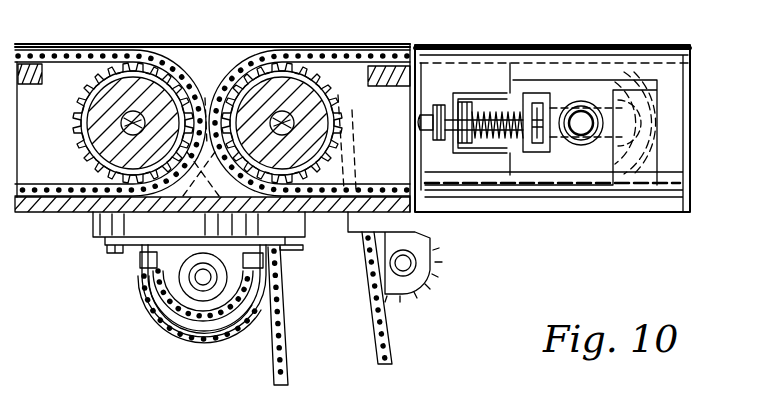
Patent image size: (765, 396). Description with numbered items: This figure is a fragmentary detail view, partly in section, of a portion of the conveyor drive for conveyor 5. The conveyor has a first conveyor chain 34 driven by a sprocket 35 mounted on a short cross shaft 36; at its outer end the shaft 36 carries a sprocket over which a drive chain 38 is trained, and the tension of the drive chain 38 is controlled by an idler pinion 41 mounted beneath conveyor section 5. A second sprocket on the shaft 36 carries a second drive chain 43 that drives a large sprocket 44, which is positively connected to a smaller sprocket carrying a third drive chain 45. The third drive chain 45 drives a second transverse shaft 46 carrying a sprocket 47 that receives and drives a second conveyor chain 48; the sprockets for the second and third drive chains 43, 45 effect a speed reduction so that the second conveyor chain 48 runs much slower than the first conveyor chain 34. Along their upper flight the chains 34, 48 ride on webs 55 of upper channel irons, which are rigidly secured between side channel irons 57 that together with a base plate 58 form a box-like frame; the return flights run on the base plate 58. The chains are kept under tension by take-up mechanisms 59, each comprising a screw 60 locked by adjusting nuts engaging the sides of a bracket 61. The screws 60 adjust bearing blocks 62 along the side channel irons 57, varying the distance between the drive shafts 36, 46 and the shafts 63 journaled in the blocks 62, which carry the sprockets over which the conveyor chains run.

The conveyor 5 is at (225, 53).
The first conveyor chain 34 is at (352, 60).
The sprocket 35 is at (338, 108).
The short cross shaft 36 is at (297, 130).
The drive chain 38 is at (284, 333).
The idler pinion 41 is at (412, 300).
The second drive chain 43 is at (152, 316).
The large sprocket 44 is at (178, 333).
The third drive chain 45 is at (157, 280).
The second transverse shaft 46 is at (115, 121).
The sprocket 47 is at (80, 146).
The second conveyor chain 48 is at (50, 56).
The web 55 is at (214, 97).
The side channel iron 57 is at (196, 66).
The base plate 58 is at (56, 213).
The take-up mechanism 59 is at (518, 155).
The screw 60 is at (486, 118).
The bracket 61 is at (488, 155).
The bearing block 62 is at (580, 145).
The shaft 63 is at (593, 148).